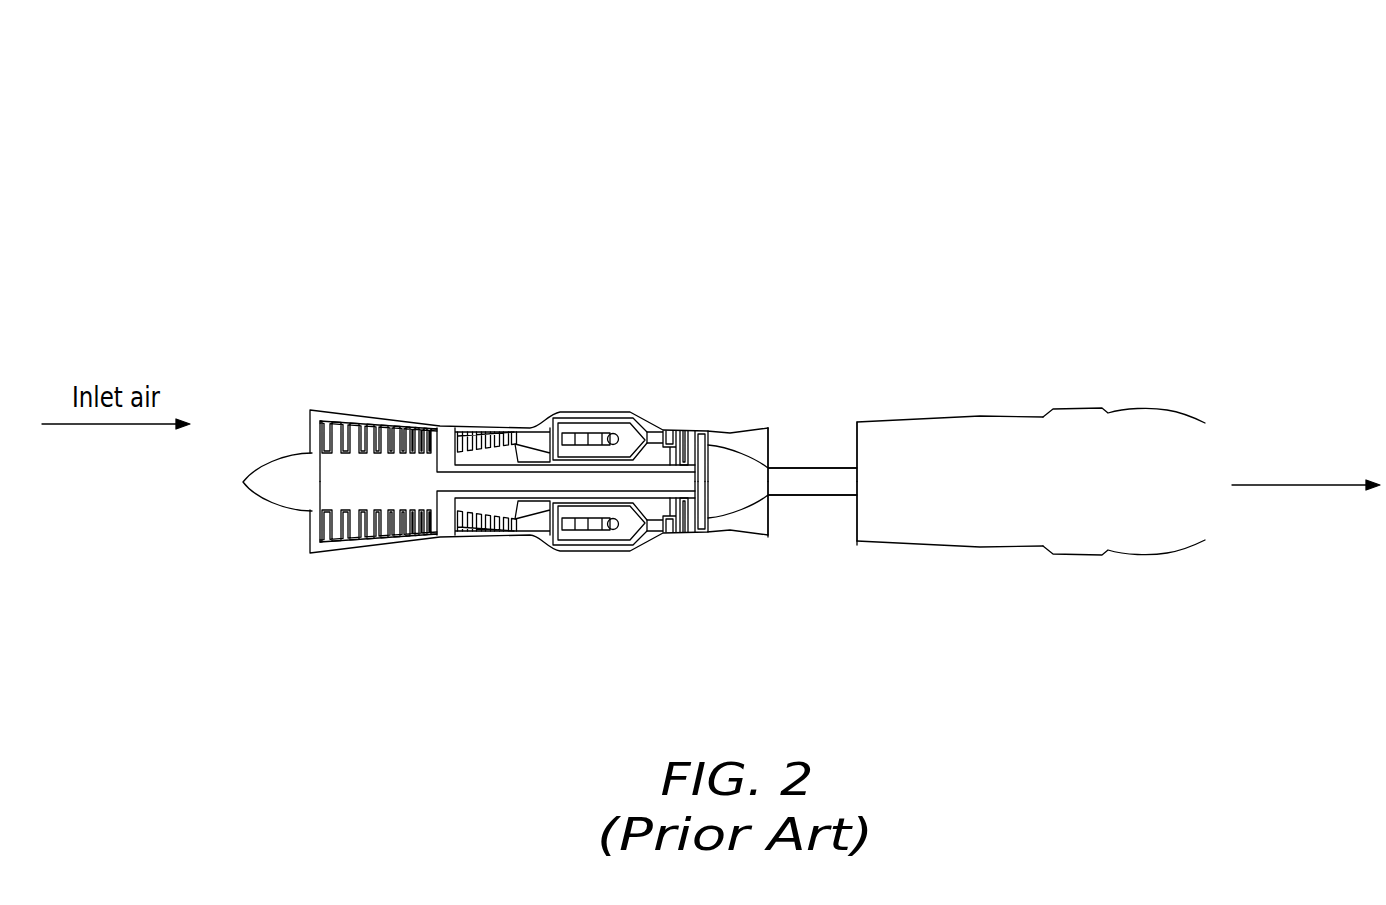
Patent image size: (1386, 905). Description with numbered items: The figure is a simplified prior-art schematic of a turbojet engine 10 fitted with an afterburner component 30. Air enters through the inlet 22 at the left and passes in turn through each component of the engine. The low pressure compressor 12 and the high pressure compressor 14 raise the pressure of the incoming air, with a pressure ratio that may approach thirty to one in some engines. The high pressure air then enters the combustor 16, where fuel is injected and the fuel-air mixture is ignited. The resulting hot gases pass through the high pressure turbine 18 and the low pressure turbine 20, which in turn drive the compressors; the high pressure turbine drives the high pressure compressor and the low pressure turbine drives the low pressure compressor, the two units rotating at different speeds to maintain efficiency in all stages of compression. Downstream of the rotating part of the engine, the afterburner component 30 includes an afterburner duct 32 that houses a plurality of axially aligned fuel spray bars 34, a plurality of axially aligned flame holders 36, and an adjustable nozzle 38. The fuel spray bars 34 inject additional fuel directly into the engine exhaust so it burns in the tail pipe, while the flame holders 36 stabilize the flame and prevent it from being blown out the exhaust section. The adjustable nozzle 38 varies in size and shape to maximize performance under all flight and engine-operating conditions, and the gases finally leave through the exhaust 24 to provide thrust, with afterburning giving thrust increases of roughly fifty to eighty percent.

The turbojet engine 10 is at (1072, 105).
The low pressure compressor 12 is at (362, 416).
The high pressure compressor 14 is at (495, 534).
The combustor 16 is at (588, 418).
The high pressure turbine 18 is at (683, 538).
The low pressure turbine 20 is at (698, 429).
The inlet 22 is at (275, 535).
The exhaust 24 is at (1285, 391).
The afterburner component 30 is at (1015, 321).
The afterburner duct 32 is at (990, 572).
The fuel spray bars 34 is at (785, 446).
The flame holders 36 is at (858, 440).
The adjustable nozzle 38 is at (1170, 408).